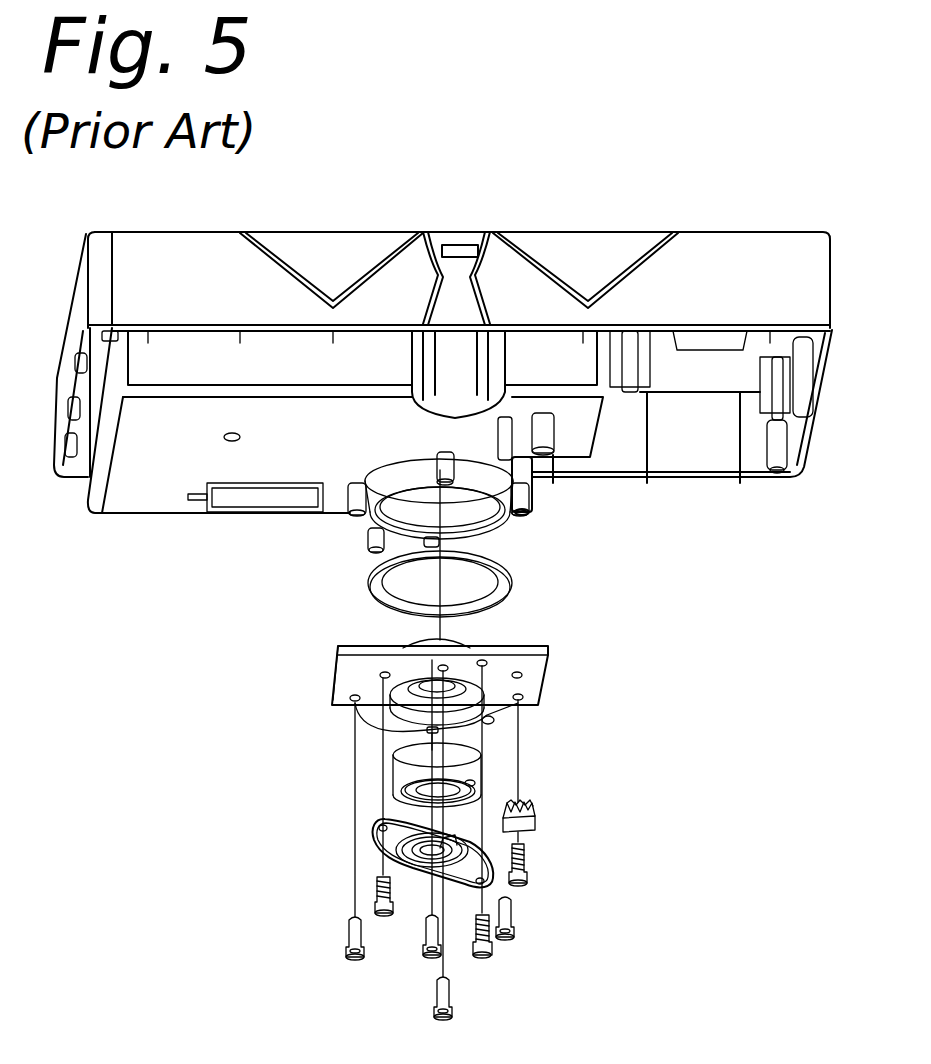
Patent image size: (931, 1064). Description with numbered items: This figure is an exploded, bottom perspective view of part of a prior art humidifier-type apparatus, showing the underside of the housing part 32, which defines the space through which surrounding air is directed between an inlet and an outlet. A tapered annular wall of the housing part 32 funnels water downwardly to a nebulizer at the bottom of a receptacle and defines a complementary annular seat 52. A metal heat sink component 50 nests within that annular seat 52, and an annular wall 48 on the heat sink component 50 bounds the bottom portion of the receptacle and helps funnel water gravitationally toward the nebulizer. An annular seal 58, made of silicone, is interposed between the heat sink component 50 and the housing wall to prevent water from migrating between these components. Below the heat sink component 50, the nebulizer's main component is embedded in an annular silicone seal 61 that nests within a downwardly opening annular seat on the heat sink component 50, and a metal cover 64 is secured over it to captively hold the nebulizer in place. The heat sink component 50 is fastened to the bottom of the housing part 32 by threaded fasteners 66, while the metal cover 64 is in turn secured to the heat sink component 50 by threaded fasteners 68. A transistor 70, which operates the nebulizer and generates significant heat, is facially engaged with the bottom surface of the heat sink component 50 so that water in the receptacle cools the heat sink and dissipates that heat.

The housing part 32 is at (203, 599).
The annular wall 48 is at (412, 640).
The metal heat sink component 50 is at (347, 688).
The annular seat 52 is at (483, 522).
The annular seal 58 is at (493, 603).
The annular silicone seal 61 is at (417, 756).
The metal cover 64 is at (372, 838).
The threaded fasteners 66 is at (527, 862).
The threaded fasteners 68 is at (377, 887).
The transistor 70 is at (537, 803).